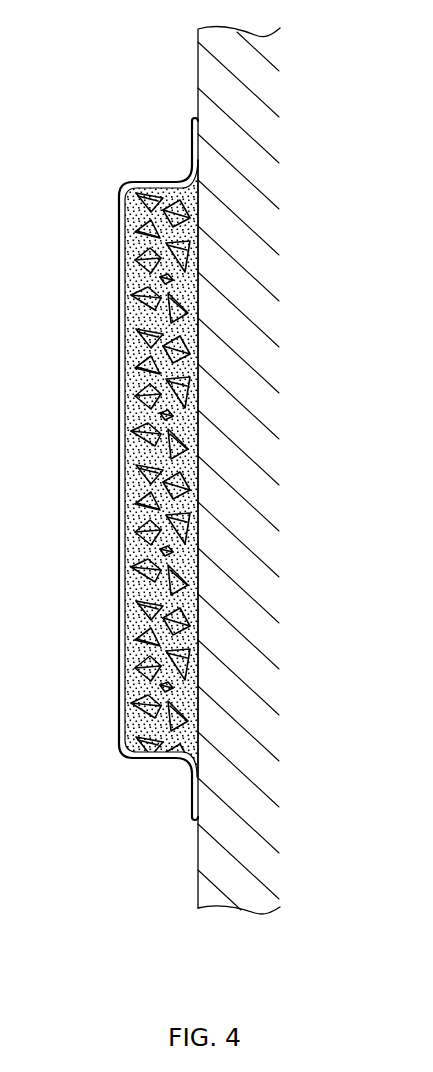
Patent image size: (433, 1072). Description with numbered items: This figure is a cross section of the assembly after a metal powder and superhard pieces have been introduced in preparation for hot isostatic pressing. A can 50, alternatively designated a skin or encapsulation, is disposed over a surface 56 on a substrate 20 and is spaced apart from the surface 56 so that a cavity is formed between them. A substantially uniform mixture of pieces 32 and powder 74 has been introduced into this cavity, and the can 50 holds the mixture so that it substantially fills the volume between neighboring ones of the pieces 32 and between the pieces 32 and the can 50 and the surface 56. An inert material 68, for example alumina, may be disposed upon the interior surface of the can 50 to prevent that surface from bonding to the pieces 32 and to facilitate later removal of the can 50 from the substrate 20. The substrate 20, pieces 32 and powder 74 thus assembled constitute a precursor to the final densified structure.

The substrate 20 is at (263, 357).
The pieces 32 is at (137, 538).
The can 50 is at (118, 262).
The surface 56 is at (198, 448).
The inert material 68 is at (193, 805).
The powder 74 is at (126, 483).